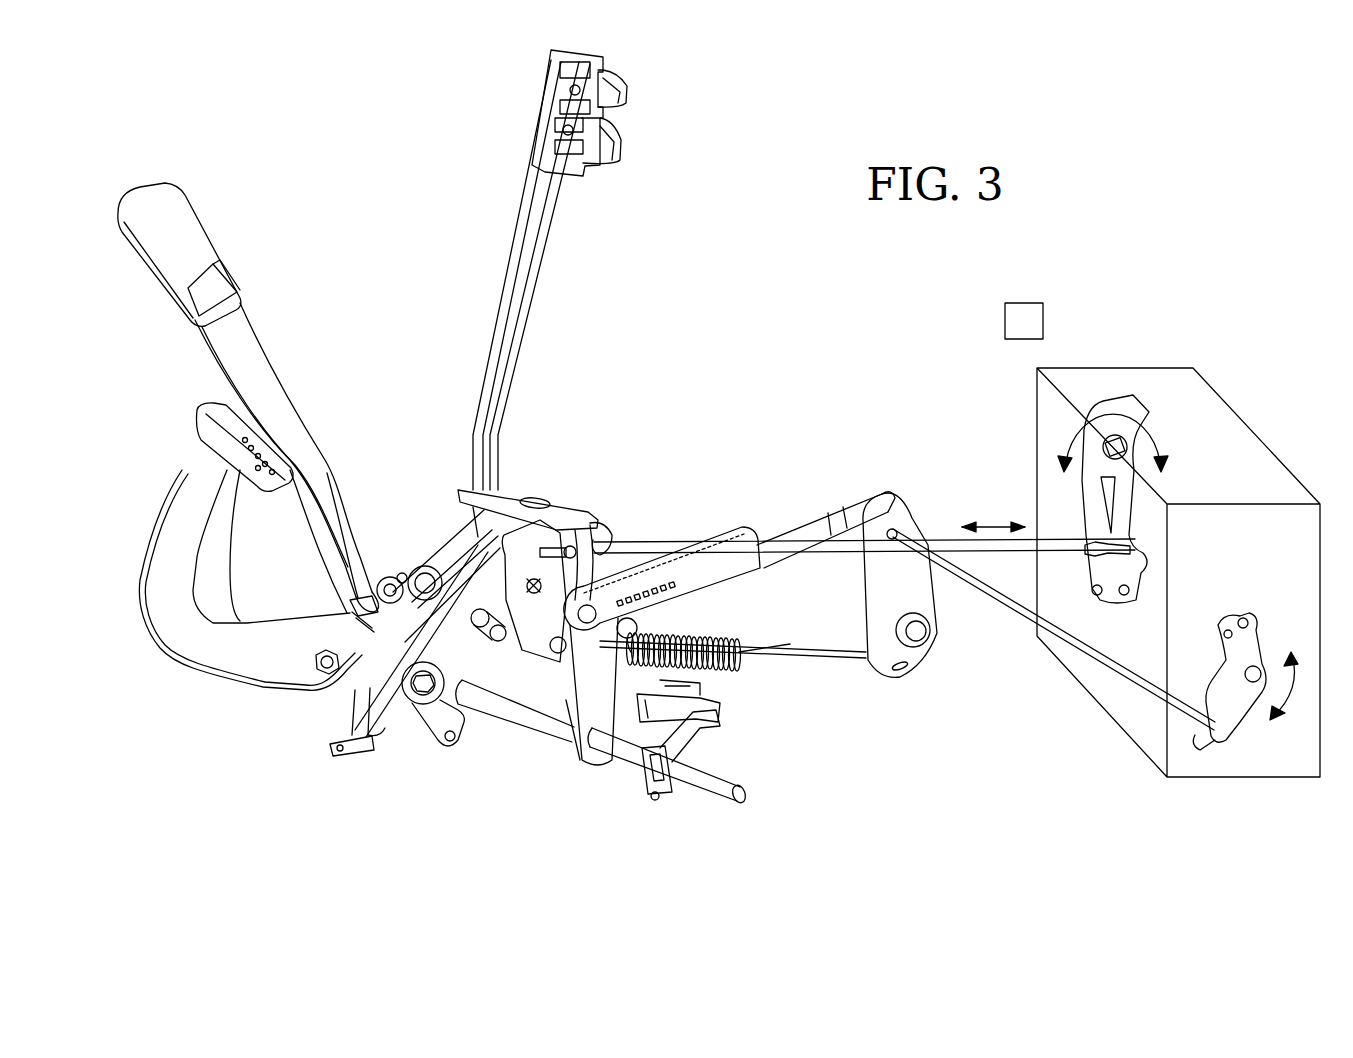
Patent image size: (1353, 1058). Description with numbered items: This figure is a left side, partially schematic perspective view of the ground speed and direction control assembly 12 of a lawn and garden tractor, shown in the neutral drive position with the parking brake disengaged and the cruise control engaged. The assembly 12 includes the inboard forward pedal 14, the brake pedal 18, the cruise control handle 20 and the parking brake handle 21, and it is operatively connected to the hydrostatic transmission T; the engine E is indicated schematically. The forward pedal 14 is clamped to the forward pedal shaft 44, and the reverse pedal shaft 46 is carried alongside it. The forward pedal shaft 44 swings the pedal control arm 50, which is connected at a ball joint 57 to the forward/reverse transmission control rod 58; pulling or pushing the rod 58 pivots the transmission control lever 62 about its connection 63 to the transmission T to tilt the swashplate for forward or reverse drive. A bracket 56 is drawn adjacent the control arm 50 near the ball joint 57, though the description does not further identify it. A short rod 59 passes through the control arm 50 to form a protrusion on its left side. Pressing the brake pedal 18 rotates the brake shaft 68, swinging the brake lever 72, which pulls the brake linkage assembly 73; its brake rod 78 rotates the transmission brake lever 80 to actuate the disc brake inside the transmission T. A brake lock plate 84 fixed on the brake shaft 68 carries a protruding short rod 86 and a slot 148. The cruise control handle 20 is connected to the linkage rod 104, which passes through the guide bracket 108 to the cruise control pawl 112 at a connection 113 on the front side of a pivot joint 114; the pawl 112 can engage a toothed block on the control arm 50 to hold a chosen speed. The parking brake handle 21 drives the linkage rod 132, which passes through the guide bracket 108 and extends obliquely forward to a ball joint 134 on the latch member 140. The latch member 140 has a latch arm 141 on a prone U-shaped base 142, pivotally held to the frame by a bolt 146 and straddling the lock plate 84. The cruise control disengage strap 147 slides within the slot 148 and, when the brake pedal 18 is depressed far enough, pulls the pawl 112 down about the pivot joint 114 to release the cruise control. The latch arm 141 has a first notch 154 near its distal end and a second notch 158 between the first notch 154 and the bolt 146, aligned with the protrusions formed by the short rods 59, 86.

The ground speed and direction control assembly 12 is at (640, 332).
The inboard forward pedal 14 is at (175, 482).
The brake pedal 18 is at (190, 208).
The cruise control handle 20 is at (628, 82).
The parking brake handle 21 is at (624, 148).
The forward pedal shaft 44 is at (545, 660).
The reverse pedal shaft 46 is at (662, 630).
The pedal control arm 50 is at (518, 618).
The bracket 56 is at (574, 527).
The ball joint 57 is at (598, 522).
The forward/reverse transmission control rod 58 is at (945, 535).
The short rod 59 is at (526, 586).
The transmission control lever 62 is at (1082, 478).
The connection 63 is at (1125, 450).
The brake shaft 68 is at (560, 742).
The brake lever 72 is at (592, 762).
The brake linkage assembly 73 is at (805, 660).
The brake rod 78 is at (1097, 663).
The transmission brake lever 80 is at (1255, 628).
The brake lock plate 84 is at (470, 714).
The short rod 86 is at (478, 640).
The linkage rod 104 is at (490, 340).
The guide bracket 108 is at (557, 510).
The cruise control pawl 112 is at (362, 600).
The connection 113 is at (350, 628).
The pivot joint 114 is at (402, 572).
The linkage rod 132 is at (530, 325).
The ball joint 134 is at (332, 748).
The latch member 140 is at (448, 600).
The latch arm 141 is at (385, 585).
The prone U-shaped base 142 is at (368, 708).
The bolt 146 is at (412, 717).
The cruise control disengage strap 147 is at (352, 690).
The slot 148 is at (440, 745).
The first notch 154 is at (498, 530).
The second notch 158 is at (458, 548).
The engine E is at (1092, 362).
The hydrostatic transmission T is at (1122, 355).